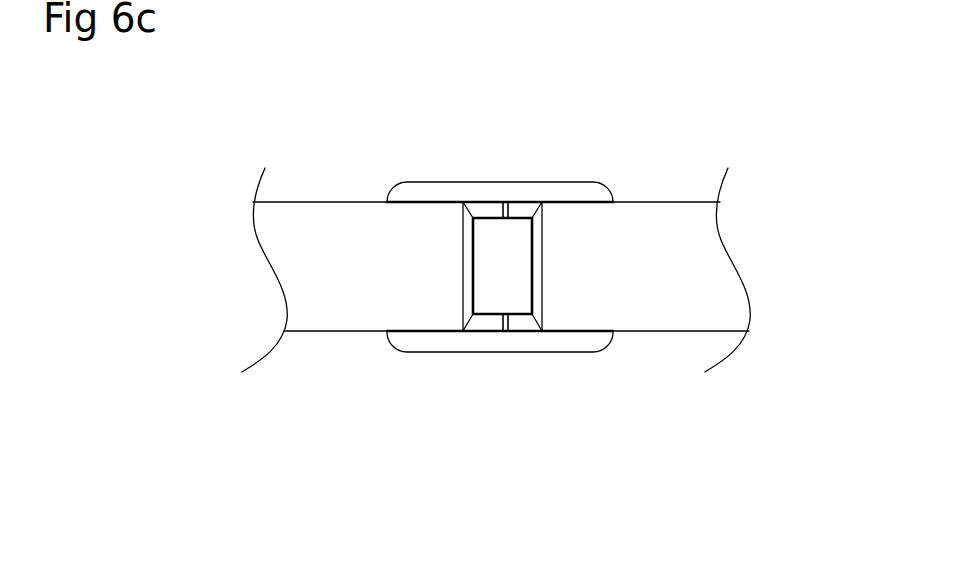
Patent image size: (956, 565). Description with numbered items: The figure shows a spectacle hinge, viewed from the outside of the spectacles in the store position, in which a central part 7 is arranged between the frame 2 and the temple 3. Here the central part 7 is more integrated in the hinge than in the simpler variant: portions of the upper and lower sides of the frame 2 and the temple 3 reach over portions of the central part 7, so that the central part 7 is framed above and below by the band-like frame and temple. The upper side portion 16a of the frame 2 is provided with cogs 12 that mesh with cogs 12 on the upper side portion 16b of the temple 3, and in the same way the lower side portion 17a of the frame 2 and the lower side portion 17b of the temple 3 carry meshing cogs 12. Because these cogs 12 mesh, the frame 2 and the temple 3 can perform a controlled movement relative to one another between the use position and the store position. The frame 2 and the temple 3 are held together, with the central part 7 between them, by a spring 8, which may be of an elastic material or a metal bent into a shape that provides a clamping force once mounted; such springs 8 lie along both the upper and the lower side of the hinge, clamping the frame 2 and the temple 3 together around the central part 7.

The frame 2 is at (358, 269).
The temple 3 is at (673, 260).
The central part 7 is at (500, 268).
The spring 8 is at (583, 192).
The cogs 12 is at (503, 212).
The upper side portion of the frame 16a is at (485, 322).
The upper side portion of the temple 16b is at (530, 325).
The lower side portion of the frame 17a is at (475, 210).
The lower side portion of the temple 17b is at (518, 210).